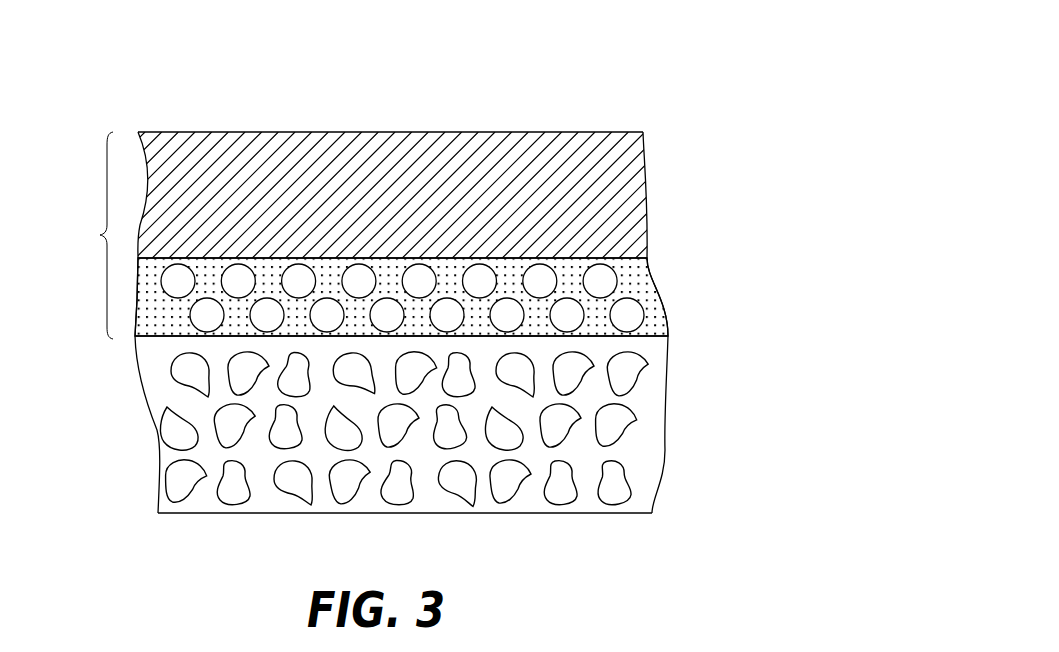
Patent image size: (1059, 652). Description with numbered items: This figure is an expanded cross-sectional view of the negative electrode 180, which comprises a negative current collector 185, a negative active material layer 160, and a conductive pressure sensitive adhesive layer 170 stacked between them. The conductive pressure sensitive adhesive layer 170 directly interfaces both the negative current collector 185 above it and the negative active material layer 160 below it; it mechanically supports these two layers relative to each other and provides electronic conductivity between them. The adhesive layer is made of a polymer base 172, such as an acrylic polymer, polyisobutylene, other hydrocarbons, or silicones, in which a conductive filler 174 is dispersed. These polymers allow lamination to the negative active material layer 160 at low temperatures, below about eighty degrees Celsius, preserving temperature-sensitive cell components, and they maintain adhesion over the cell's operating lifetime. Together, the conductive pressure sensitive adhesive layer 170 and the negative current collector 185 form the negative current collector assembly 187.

The negative electrode 180 is at (680, 104).
The negative current collector assembly 187 is at (71, 235).
The negative current collector 185 is at (593, 208).
The conductive pressure sensitive adhesive layer 170 is at (685, 315).
The polymer base 172 is at (640, 282).
The conductive filler 174 is at (626, 313).
The negative active material layer 160 is at (648, 432).